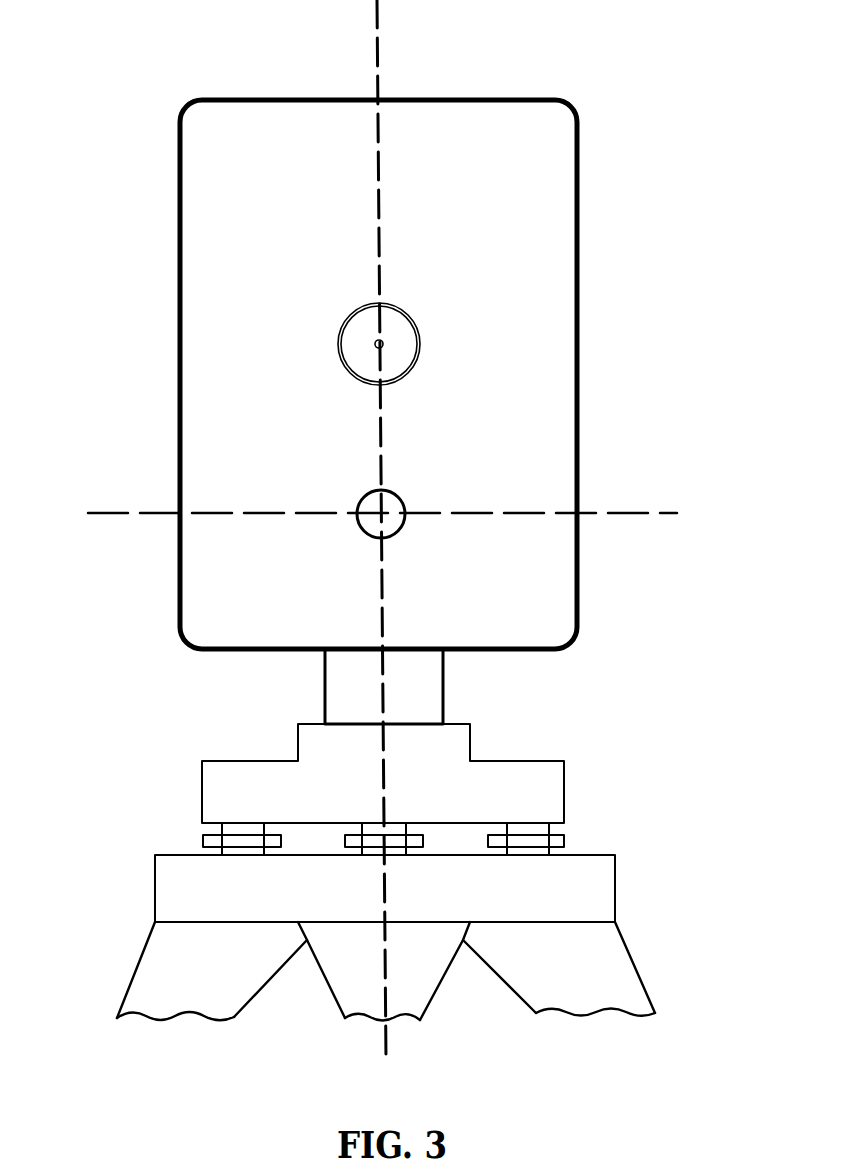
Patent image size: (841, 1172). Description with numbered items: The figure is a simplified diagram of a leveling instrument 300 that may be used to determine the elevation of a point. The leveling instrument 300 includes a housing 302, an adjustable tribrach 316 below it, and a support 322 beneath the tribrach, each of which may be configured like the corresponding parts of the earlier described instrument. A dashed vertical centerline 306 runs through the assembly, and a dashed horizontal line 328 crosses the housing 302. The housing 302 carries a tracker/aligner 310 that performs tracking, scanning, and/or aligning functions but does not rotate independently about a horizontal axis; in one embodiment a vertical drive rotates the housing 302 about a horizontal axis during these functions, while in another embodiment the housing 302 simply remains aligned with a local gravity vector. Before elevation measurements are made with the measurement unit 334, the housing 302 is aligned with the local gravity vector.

The leveling instrument 300 is at (142, 52).
The housing 302 is at (582, 618).
The central axis 306 is at (377, 60).
The tracker/aligner 310 is at (383, 305).
The adjustable tribrach 316 is at (565, 770).
The support 322 is at (615, 873).
The horizontal axis 328 is at (625, 513).
The measurement unit 334 is at (360, 505).